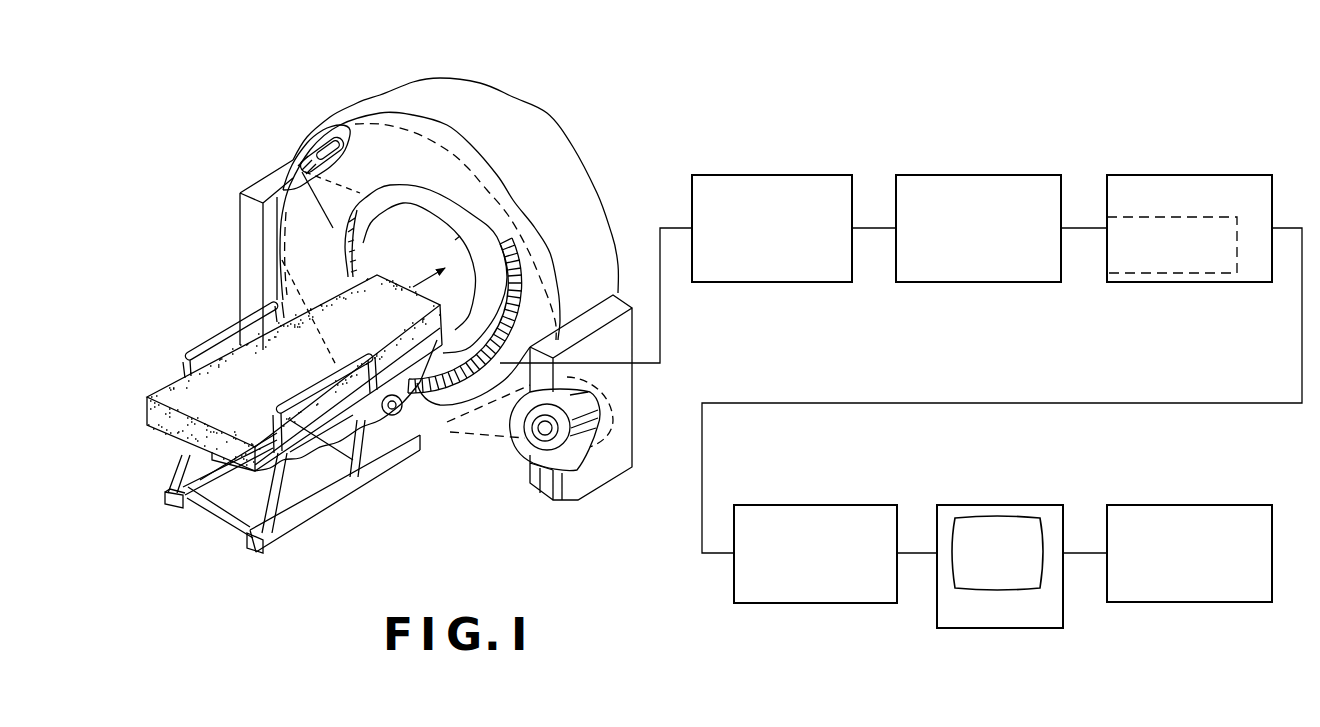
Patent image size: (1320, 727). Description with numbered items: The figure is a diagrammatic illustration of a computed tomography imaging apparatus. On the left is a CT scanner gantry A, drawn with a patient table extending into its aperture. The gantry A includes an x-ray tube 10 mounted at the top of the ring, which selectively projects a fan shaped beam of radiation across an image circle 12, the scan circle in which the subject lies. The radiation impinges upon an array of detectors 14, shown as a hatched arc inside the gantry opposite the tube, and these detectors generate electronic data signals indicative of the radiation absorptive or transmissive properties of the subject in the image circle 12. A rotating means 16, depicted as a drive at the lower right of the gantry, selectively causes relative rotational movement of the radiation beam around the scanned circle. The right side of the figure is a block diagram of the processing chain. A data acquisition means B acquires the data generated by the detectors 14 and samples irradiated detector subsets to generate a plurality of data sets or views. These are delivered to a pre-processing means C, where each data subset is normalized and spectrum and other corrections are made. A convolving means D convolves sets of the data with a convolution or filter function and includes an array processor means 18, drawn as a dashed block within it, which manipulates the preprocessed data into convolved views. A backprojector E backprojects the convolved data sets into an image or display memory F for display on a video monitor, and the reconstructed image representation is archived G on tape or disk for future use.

The CT scanner gantry A is at (493, 87).
The data acquisition means B is at (758, 172).
The pre-processing means C is at (963, 172).
The convolving means D is at (1178, 172).
The backprojector E is at (803, 503).
The image or display memory F is at (985, 503).
The archiving means G is at (1183, 503).
The x-ray tube 10 is at (318, 145).
The image circle 12 is at (458, 238).
The array of detectors 14 is at (451, 393).
The rotating means 16 is at (565, 457).
The array processor means 18 is at (1158, 276).